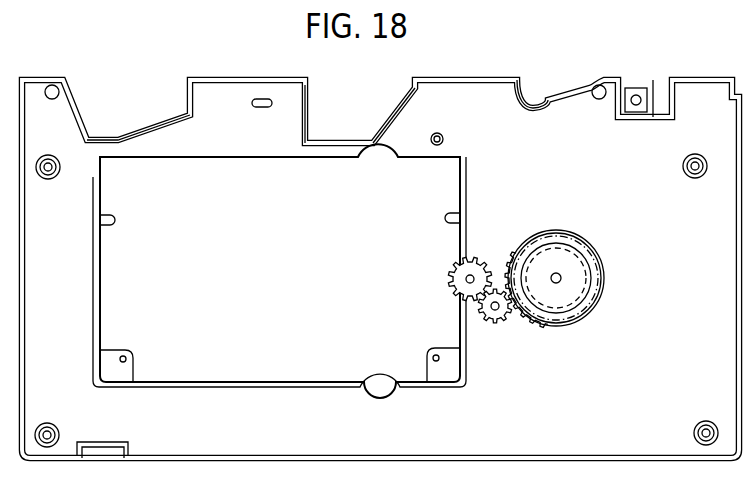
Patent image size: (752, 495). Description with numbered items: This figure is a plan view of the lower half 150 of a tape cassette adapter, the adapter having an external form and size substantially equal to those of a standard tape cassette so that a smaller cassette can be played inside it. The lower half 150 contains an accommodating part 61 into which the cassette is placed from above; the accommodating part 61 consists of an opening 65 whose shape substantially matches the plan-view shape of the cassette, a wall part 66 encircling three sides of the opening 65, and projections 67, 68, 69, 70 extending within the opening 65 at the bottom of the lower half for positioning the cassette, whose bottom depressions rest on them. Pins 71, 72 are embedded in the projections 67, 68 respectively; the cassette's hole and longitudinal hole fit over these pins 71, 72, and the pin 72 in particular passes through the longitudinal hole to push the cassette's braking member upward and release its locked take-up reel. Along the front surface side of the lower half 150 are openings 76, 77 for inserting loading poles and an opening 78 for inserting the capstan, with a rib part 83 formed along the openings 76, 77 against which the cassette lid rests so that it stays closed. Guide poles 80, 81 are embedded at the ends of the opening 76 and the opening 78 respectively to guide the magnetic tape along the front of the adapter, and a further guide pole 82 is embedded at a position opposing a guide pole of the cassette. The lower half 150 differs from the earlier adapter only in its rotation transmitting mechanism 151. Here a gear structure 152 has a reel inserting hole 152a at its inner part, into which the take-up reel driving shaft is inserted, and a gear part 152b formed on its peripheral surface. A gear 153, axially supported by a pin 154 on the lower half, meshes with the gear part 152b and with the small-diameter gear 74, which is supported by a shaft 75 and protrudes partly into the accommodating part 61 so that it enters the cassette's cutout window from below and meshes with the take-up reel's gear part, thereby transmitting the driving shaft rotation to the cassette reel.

The lower half 150 is at (183, 45).
The accommodating part 61 is at (290, 384).
The opening 65 is at (242, 372).
The wall part 66 is at (207, 388).
The projection 67 is at (113, 346).
The projection 68 is at (444, 346).
The projection 69 is at (117, 219).
The projection 70 is at (449, 215).
The pin 71 is at (128, 358).
The pin 72 is at (429, 356).
The gear 74 is at (472, 259).
The shaft 75 is at (458, 281).
The opening 76 is at (155, 115).
The opening 77 is at (385, 120).
The opening 78 is at (537, 100).
The guide pole 80 is at (52, 85).
The guide pole 81 is at (600, 85).
The guide pole 82 is at (443, 135).
The rib part 83 is at (307, 105).
The rotation transmitting mechanism 151 is at (582, 274).
The gear structure 152 is at (546, 234).
The reel inserting hole 152a is at (600, 286).
The gear part 152b is at (531, 323).
The gear 153 is at (507, 320).
The pin 154 is at (490, 324).